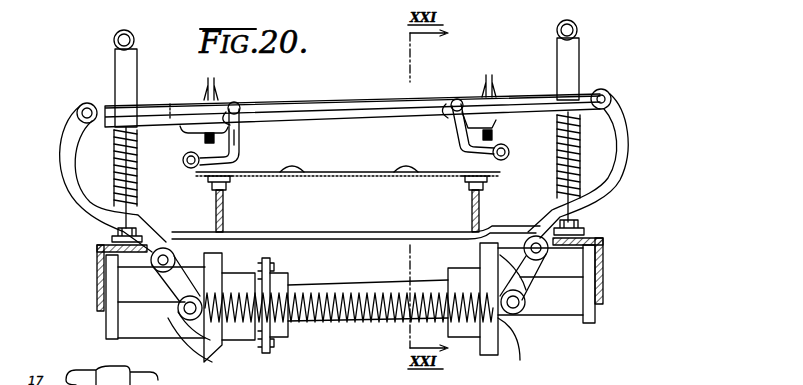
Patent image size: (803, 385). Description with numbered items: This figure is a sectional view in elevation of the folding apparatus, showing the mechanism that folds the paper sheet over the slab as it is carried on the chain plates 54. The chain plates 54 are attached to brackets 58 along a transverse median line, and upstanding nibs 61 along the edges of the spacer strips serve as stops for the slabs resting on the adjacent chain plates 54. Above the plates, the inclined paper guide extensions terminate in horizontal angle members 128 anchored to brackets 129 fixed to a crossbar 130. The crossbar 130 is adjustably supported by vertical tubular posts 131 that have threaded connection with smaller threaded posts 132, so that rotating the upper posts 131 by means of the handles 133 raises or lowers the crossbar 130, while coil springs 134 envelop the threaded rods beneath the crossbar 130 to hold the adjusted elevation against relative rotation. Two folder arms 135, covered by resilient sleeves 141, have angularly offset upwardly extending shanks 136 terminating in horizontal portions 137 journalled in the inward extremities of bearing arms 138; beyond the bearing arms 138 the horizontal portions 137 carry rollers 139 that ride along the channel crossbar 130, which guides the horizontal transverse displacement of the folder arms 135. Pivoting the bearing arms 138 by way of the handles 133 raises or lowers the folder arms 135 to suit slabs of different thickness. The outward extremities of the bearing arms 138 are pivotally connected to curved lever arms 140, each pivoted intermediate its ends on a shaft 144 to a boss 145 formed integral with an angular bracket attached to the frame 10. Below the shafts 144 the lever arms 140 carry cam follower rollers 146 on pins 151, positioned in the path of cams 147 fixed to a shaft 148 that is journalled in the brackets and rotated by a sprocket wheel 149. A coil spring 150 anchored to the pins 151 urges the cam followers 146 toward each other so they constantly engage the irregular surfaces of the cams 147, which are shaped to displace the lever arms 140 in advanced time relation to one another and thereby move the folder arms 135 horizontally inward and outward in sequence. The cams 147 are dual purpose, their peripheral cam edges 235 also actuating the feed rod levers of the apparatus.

The frame 10 is at (90, 293).
The chain plates 54 is at (348, 171).
The brackets 58 is at (232, 188).
The upstanding nibs 61 is at (290, 166).
The horizontal angle members 128 is at (212, 132).
The brackets 129 is at (198, 126).
The crossbar 130 is at (318, 100).
The vertical tubular posts 131 is at (123, 80).
The smaller threaded posts 132 is at (128, 196).
The handle 133 is at (113, 40).
The coil springs 134 is at (120, 185).
The folder arms 135 is at (190, 168).
The shanks 136 is at (240, 142).
The horizontal portions 137 is at (242, 104).
The bearing arms 138 is at (578, 97).
The rollers 139 is at (240, 124).
The lever arms 140 is at (72, 160).
The resilient sleeves 141 is at (188, 152).
The shafts 144 is at (162, 262).
The boss 145 is at (176, 256).
The cam follower rollers 146 is at (184, 308).
The cams 147 is at (185, 345).
The shaft 148 is at (340, 322).
The sprocket wheel 149 is at (283, 272).
The coil spring 150 is at (364, 296).
The pins 151 is at (220, 340).
The peripheral cam edges 235 is at (488, 352).